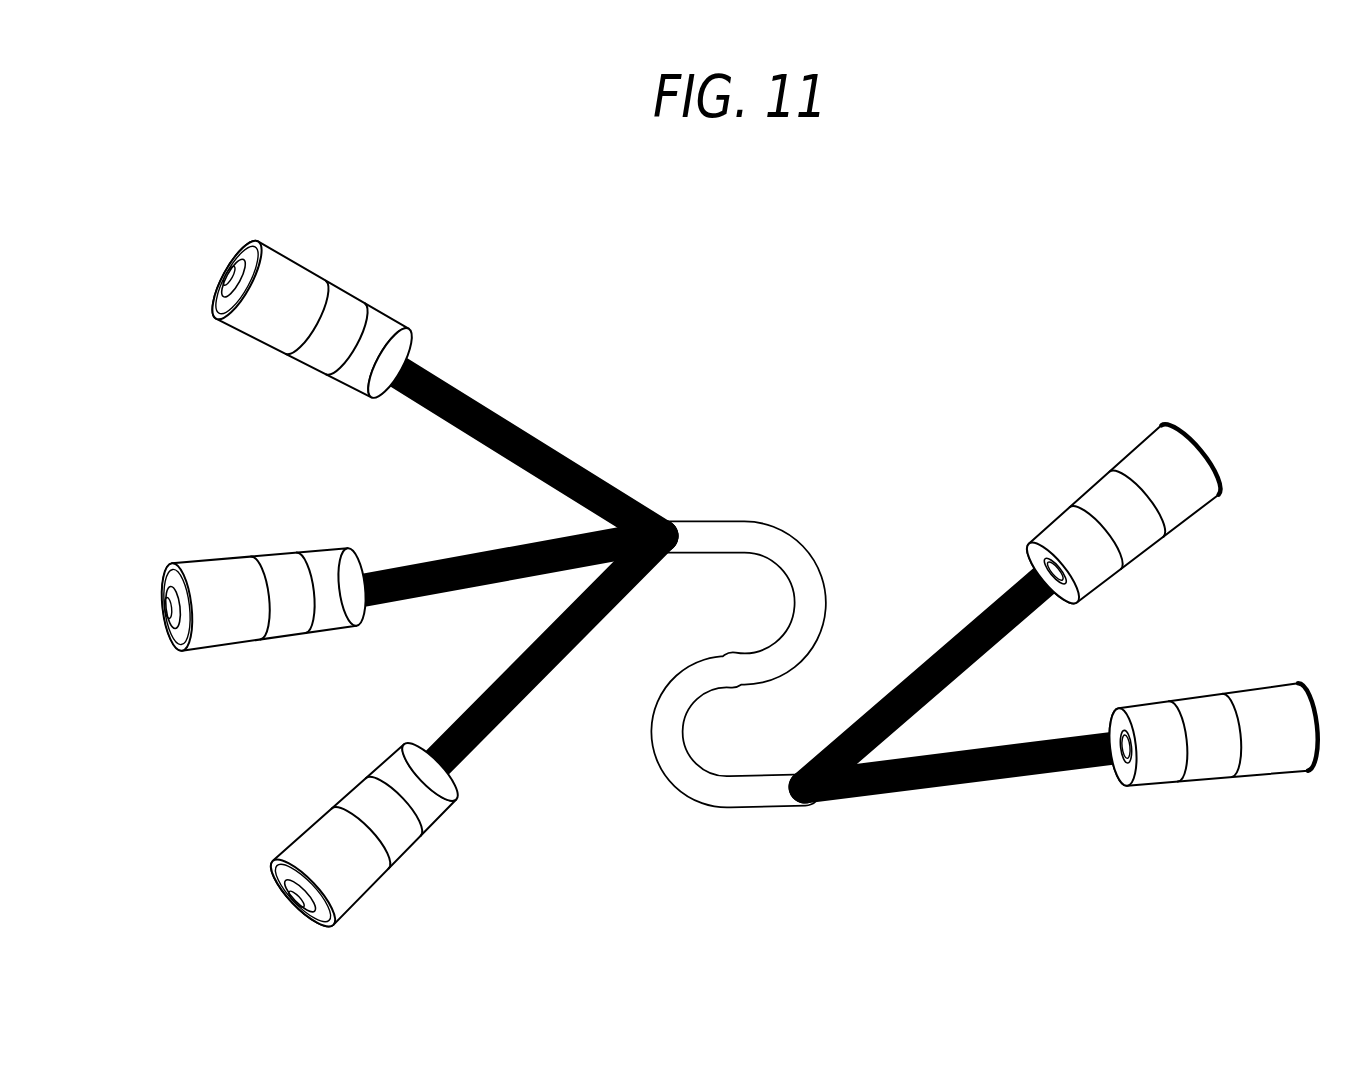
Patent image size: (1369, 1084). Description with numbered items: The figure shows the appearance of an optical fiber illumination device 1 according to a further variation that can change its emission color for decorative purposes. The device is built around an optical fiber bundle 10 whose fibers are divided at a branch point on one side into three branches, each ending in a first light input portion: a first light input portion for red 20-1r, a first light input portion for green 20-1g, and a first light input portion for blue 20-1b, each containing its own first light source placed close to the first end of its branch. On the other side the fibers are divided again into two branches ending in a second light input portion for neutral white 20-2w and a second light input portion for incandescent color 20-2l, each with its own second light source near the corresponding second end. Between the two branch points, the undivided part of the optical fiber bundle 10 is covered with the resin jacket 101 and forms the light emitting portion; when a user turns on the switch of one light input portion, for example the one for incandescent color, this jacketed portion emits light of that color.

The optical fiber illumination device 1 is at (750, 363).
The optical fiber bundle 10 is at (744, 637).
The resin jacket 101 is at (808, 590).
The first light input portion for red 20-1r is at (298, 285).
The first light input portion for green 20-1g is at (233, 585).
The first light input portion for blue 20-1b is at (313, 857).
The second light input portion for incandescent color 20-2l is at (1142, 467).
The second light input portion for neutral white 20-2w is at (1212, 767).